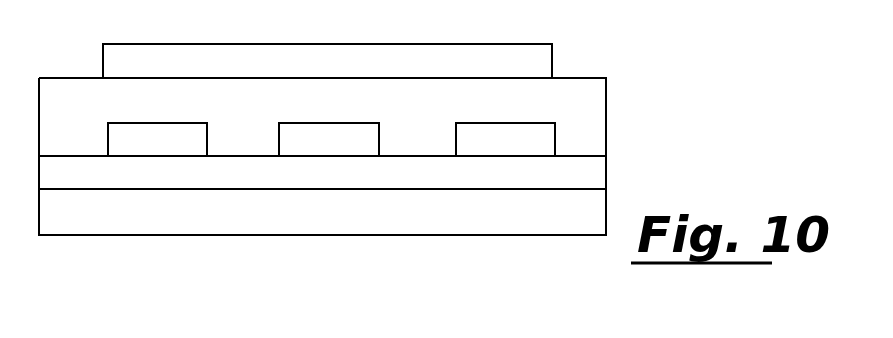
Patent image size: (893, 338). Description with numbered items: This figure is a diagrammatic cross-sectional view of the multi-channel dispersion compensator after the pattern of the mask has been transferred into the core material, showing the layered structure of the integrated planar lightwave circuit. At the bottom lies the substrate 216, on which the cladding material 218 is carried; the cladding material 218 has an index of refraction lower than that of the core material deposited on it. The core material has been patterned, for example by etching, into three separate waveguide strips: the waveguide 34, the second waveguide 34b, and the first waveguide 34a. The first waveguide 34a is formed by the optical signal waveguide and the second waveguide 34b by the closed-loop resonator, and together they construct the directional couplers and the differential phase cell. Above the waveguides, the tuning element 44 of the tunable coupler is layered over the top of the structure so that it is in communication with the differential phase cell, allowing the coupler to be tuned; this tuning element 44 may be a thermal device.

The tuning element 44 is at (532, 58).
The cladding material 218 is at (606, 172).
The substrate 216 is at (606, 207).
The waveguide 34 is at (151, 122).
The second waveguide 34b is at (331, 122).
The first waveguide 34a is at (517, 122).